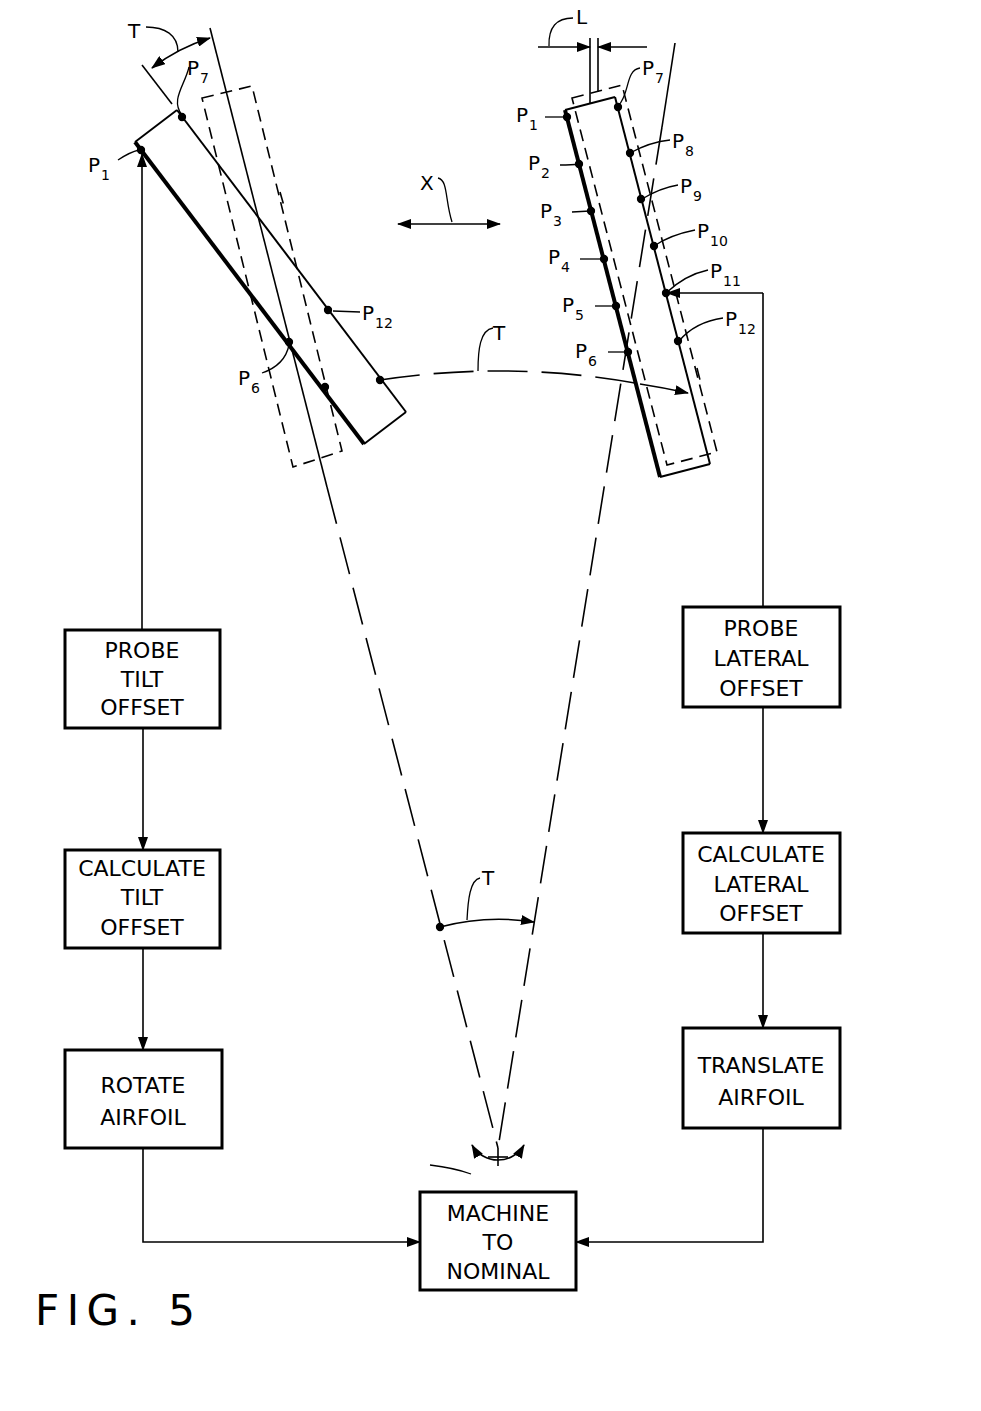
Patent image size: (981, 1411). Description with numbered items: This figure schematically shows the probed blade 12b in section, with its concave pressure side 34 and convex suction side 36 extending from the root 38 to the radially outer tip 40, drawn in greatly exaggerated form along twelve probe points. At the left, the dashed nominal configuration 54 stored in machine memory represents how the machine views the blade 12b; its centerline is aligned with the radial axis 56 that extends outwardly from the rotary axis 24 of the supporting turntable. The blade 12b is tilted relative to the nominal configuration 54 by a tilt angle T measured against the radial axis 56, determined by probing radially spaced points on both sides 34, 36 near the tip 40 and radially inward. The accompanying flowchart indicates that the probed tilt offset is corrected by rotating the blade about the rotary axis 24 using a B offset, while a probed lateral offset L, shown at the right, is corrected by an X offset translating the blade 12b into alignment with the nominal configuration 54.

The radially outer tip 40 is at (158, 123).
The pressure side 34 is at (227, 175).
The nominal configuration 54 is at (280, 192).
The suction side 36 is at (212, 245).
The blade 12b is at (228, 270).
The root 38 is at (392, 427).
The radial axis 56 is at (393, 735).
The rotary axis 24 is at (500, 1152).